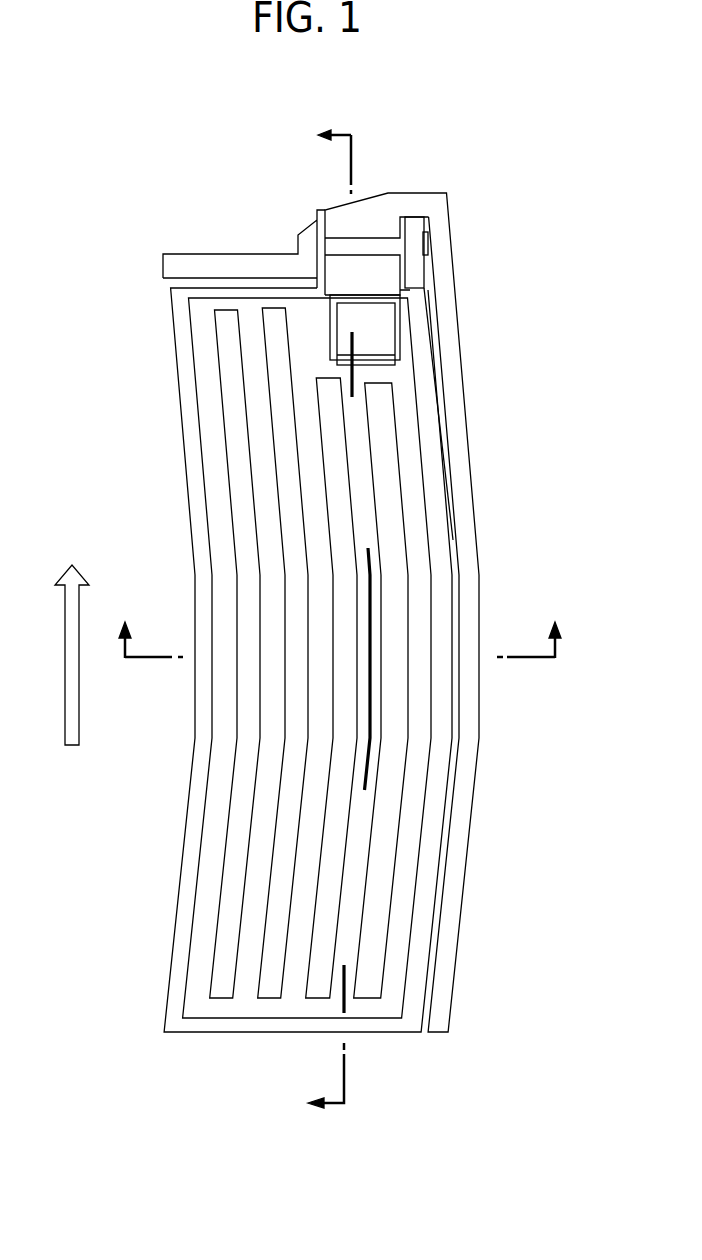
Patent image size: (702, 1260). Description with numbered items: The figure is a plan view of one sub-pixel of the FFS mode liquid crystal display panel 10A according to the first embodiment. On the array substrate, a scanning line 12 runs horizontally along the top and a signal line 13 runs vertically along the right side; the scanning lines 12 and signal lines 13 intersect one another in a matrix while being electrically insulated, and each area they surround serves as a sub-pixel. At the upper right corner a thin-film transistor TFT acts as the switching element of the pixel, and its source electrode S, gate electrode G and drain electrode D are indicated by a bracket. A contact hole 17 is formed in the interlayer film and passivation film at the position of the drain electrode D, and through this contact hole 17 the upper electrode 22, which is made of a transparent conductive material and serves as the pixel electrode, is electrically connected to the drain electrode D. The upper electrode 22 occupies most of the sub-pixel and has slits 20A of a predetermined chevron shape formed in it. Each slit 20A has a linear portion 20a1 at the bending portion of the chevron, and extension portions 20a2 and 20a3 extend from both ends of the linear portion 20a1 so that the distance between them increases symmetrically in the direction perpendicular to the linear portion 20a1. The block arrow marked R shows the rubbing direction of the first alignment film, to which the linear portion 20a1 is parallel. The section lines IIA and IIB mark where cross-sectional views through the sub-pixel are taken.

The liquid crystal display panel 10A is at (292, 78).
The scanning line 12 is at (183, 264).
The signal line 13 is at (465, 486).
The contact hole 17 is at (383, 332).
The upper electrode 22 is at (402, 911).
The slit 20A is at (403, 813).
The linear portion 20a1 is at (410, 609).
The extension portion 20a2 is at (218, 396).
The extension portion 20a3 is at (218, 953).
The source electrode S is at (375, 218).
The gate electrode G is at (377, 250).
The drain electrode D is at (382, 277).
The thin-film transistor TFT is at (516, 192).
The section line IIA is at (321, 620).
The section line IIB is at (339, 627).
The rubbing direction R is at (72, 638).